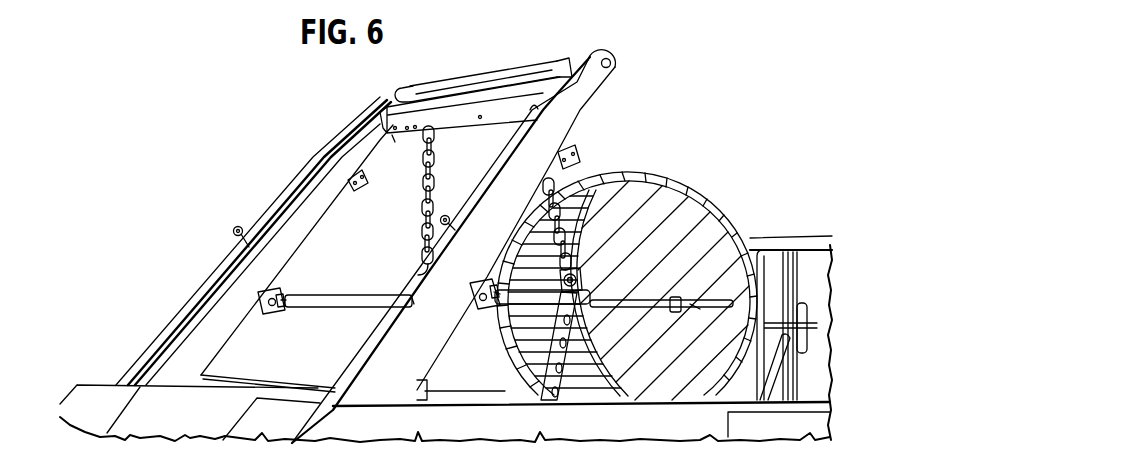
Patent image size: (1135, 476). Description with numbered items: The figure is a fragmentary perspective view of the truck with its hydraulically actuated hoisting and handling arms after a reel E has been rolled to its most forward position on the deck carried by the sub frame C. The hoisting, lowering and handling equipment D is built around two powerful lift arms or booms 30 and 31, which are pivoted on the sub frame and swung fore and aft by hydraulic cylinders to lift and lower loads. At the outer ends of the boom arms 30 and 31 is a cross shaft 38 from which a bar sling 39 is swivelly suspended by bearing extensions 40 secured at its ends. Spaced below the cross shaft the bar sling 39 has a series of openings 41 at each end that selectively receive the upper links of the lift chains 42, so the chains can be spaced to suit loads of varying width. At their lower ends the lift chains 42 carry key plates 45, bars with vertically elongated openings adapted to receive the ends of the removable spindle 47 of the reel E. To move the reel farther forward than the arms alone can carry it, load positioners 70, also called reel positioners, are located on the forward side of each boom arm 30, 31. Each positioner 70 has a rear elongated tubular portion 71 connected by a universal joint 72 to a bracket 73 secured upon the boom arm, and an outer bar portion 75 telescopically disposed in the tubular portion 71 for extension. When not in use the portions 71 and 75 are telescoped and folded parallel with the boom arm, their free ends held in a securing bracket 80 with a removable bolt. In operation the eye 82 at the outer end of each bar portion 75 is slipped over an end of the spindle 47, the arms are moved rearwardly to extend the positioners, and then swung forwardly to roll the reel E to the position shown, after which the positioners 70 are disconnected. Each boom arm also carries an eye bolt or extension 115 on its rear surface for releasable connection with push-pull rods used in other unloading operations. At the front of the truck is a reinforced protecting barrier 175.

The lift arm or boom 30 is at (300, 233).
The lift arm or boom 31 is at (417, 282).
The cross shaft 38 is at (505, 78).
The bar sling 39 is at (517, 93).
The bearing extension 40 is at (404, 86).
The openings 41 is at (392, 135).
The lift chain 42 is at (423, 192).
The key plate 45 is at (479, 372).
The spindle or shaft 47 is at (697, 312).
The load positioner (reel positioner) 70 is at (355, 291).
The rear elongated tubular portion 71 is at (320, 307).
The universal joint 72 is at (281, 308).
The bracket 73 is at (260, 303).
The outer bar portion 75 is at (637, 310).
The securing bracket 80 is at (364, 186).
The eye 82 is at (677, 299).
The eye bolt or extension 115 is at (236, 226).
The front reinforced protecting barrier 175 is at (821, 228).
The sub frame C is at (593, 427).
The hydraulically operated hoisting, lowering and handling equipment D is at (617, 85).
The reel E is at (703, 200).